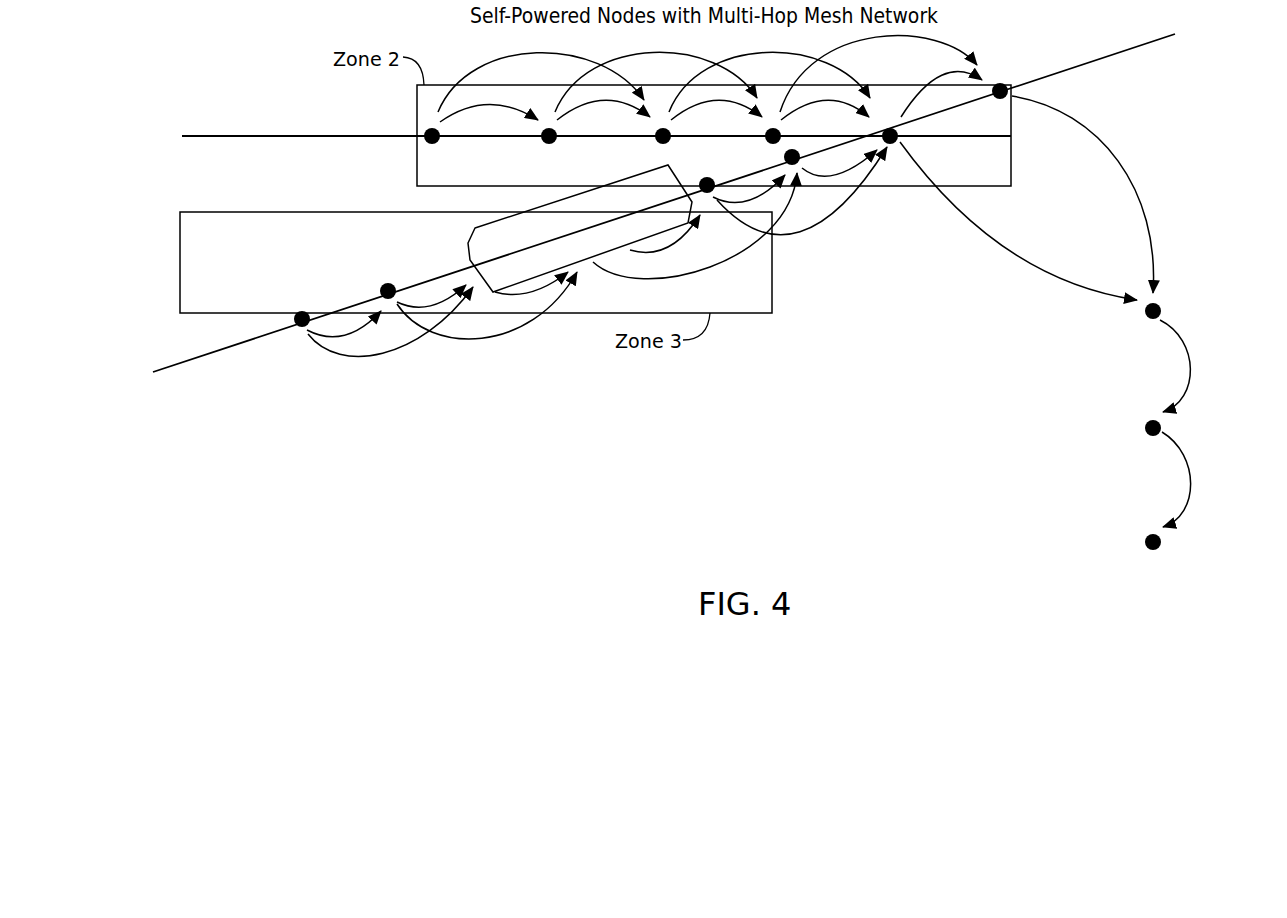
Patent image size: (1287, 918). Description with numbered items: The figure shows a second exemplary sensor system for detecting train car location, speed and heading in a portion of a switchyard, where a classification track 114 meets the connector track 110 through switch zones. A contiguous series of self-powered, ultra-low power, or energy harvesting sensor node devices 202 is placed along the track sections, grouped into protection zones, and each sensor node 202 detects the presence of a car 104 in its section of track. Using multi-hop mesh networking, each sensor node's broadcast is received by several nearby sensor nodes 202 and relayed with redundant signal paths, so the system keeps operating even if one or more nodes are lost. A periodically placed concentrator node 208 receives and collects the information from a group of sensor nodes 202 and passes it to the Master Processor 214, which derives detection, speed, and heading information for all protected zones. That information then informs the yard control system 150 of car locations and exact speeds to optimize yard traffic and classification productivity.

The car 104 is at (462, 240).
The connector track 110 is at (1145, 42).
The classification track 114 is at (277, 133).
The yard control system 150 is at (1162, 543).
The sensor node device 202 is at (652, 185).
The concentrator node 208 is at (1162, 311).
The Master Processor 214 is at (1162, 429).